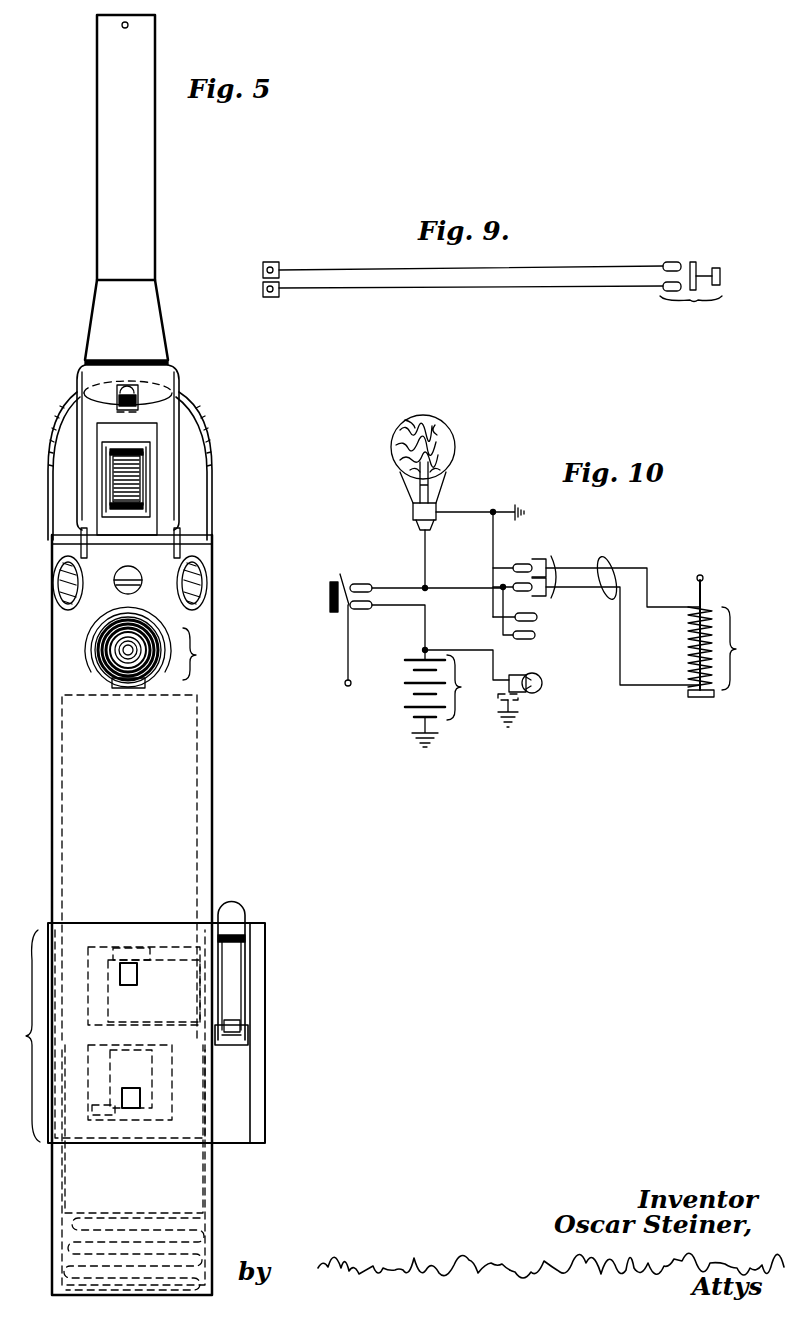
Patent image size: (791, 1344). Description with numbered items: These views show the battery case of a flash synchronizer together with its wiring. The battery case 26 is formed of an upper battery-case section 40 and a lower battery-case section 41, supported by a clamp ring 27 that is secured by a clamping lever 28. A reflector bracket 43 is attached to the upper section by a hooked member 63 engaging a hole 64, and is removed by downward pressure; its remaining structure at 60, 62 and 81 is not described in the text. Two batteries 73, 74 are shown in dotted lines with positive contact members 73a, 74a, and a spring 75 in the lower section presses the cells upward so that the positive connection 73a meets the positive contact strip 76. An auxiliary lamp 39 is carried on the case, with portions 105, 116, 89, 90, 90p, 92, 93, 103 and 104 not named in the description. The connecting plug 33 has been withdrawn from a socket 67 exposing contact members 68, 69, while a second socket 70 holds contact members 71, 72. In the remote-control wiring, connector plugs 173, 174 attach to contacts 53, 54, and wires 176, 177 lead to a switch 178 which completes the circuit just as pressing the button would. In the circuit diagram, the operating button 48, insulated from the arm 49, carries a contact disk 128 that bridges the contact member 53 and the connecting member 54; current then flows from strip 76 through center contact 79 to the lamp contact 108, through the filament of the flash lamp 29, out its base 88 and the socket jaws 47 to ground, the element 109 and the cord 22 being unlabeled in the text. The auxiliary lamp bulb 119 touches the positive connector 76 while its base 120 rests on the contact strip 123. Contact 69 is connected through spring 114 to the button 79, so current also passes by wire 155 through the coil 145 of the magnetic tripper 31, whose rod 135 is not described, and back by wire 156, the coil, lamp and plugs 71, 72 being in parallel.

In FIG. 5, the reflector bracket 43 is at (150, 187).
In FIG. 5, the head shell casing 60 is at (90, 428).
In FIG. 5, the hole 64 is at (84, 394).
In FIG. 5, the hooked member 63 is at (172, 394).
In FIG. 5, the coil 81 is at (102, 475).
In FIG. 5, the terminal pins 62 is at (116, 541).
In FIG. 5, the second socket 70 is at (54, 581).
In FIG. 5, the contact member 71 is at (58, 567).
In FIG. 10, the contact member 71 is at (537, 621).
In FIG. 5, the contact member 72 is at (58, 597).
In FIG. 10, the contact member 72 is at (535, 639).
In FIG. 5, the socket 67 is at (208, 583).
In FIG. 5, the contact member 68 is at (204, 571).
In FIG. 10, the contact member 68 is at (520, 565).
In FIG. 5, the contact member 69 is at (204, 600).
In FIG. 10, the contact member 69 is at (520, 594).
In FIG. 5, the screw 105 is at (118, 587).
In FIG. 5, the auxiliary lamp 39 is at (196, 660).
In FIG. 5, the lens ring 116 is at (100, 672).
In FIG. 5, the battery 73 is at (188, 807).
In FIG. 10, the battery 73 is at (444, 670).
In FIG. 5, the positive contact member 73a is at (116, 698).
In FIG. 5, the upper battery-case section 40 is at (213, 755).
In FIG. 5, the battery case 26 is at (134, 1033).
In FIG. 5, the clamp member or ring 27 is at (83, 925).
In FIG. 5, the positive contact member 74a is at (125, 946).
In FIG. 5, the contact spring 90 is at (165, 940).
In FIG. 5, the contact button 92 is at (137, 975).
In FIG. 5, the switch plate 89 is at (100, 1003).
In FIG. 5, the contact spring 90 prime 90p is at (96, 1123).
In FIG. 5, the clamping lever 28 is at (232, 925).
In FIG. 5, the button guide 93 is at (257, 968).
In FIG. 5, the button base 103 is at (246, 1036).
In FIG. 5, the button contact 104 is at (245, 1026).
In FIG. 5, the lower battery-case section 41 is at (53, 1183).
In FIG. 5, the battery 74 is at (186, 1178).
In FIG. 10, the battery 74 is at (444, 701).
In FIG. 5, the spring 75 is at (188, 1236).
In FIG. 9, the connector plug 173 is at (276, 263).
In FIG. 9, the connector plug 174 is at (276, 297).
In FIG. 9, the wire 176 is at (392, 268).
In FIG. 9, the wire 177 is at (386, 290).
In FIG. 9, the switch 178 is at (691, 292).
In FIG. 10, the flash lamp 29 is at (453, 440).
In FIG. 10, the flash-lamp base 88 is at (413, 509).
In FIG. 10, the lamp contact 108 is at (418, 527).
In FIG. 10, the center contact 79 is at (428, 529).
In FIG. 10, the jaws 47 is at (478, 504).
In FIG. 10, the spring 114 is at (460, 581).
In FIG. 10, the conductor 109 is at (402, 583).
In FIG. 10, the contact member 53 is at (366, 582).
In FIG. 10, the connecting member 54 is at (364, 610).
In FIG. 10, the contact disk 128 is at (345, 582).
In FIG. 10, the operating button 48 is at (329, 597).
In FIG. 10, the arm 49 is at (347, 647).
In FIG. 10, the positive contact strip 76 is at (425, 627).
In FIG. 10, the lamp bulb base 120 is at (518, 676).
In FIG. 10, the auxiliary lamp bulb 119 is at (542, 691).
In FIG. 10, the contact strip 123 is at (505, 705).
In FIG. 10, the connecting plug 33 is at (548, 588).
In FIG. 10, the cord 22 is at (612, 569).
In FIG. 10, the wire 155 is at (650, 600).
In FIG. 10, the wire 156 is at (658, 690).
In FIG. 10, the heater rod 135 is at (704, 600).
In FIG. 10, the magnetic tripper 31 is at (725, 652).
In FIG. 10, the coil 145 is at (690, 652).